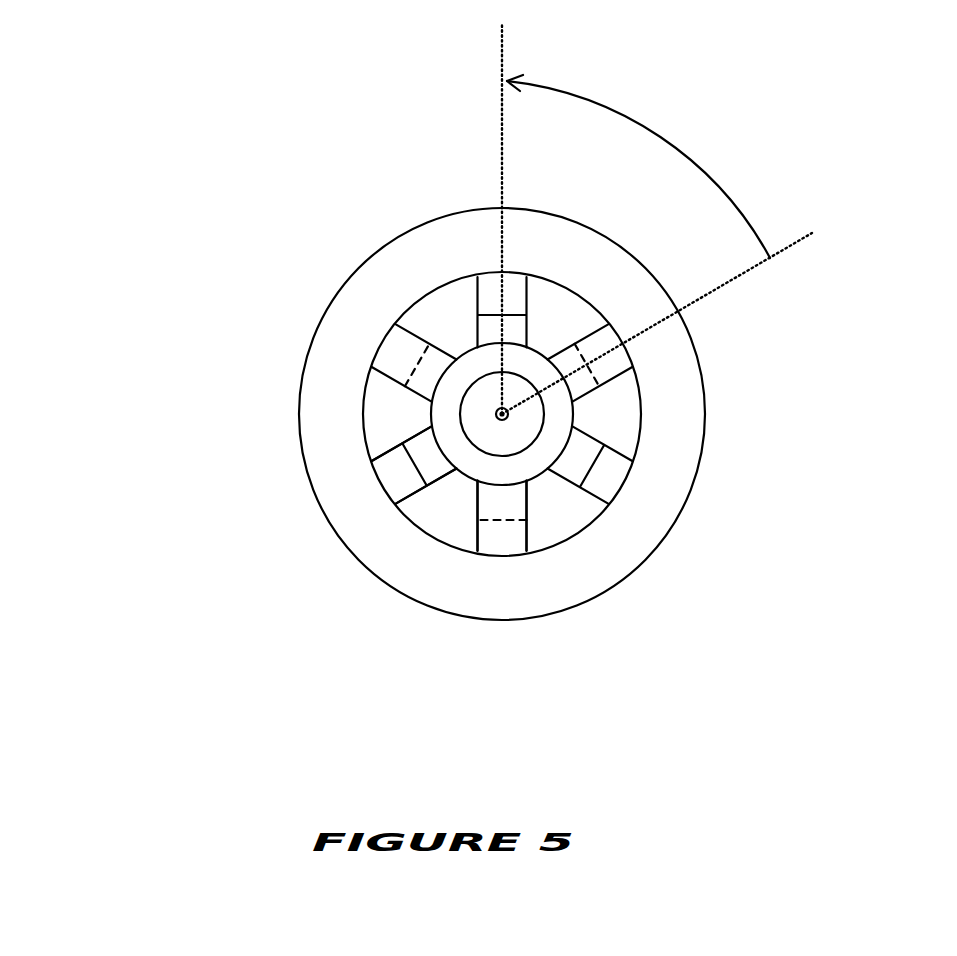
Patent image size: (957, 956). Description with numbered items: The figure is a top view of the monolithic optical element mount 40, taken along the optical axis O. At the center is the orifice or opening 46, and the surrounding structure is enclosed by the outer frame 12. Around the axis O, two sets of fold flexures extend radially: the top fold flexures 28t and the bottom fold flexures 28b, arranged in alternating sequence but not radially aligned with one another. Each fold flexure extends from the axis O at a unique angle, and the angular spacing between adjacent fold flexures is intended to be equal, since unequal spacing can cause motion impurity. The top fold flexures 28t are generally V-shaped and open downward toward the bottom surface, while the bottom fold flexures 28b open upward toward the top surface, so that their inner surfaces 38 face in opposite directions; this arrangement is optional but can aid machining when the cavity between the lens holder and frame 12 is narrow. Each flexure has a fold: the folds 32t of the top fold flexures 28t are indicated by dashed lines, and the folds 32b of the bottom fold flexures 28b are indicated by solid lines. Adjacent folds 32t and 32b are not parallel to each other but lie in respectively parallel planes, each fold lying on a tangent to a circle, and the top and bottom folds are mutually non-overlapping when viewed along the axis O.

The frame 12 is at (640, 575).
The centered orifice 46 is at (533, 410).
The optical axis O is at (508, 420).
The inner surface 38 is at (494, 292).
The top fold flexure 28t is at (400, 340).
The bottom fold flexure 28b is at (393, 450).
The fold of top fold flexure 32t is at (483, 520).
The fold of bottom fold flexure 32b is at (390, 453).
The optical element mount 40 is at (933, 334).